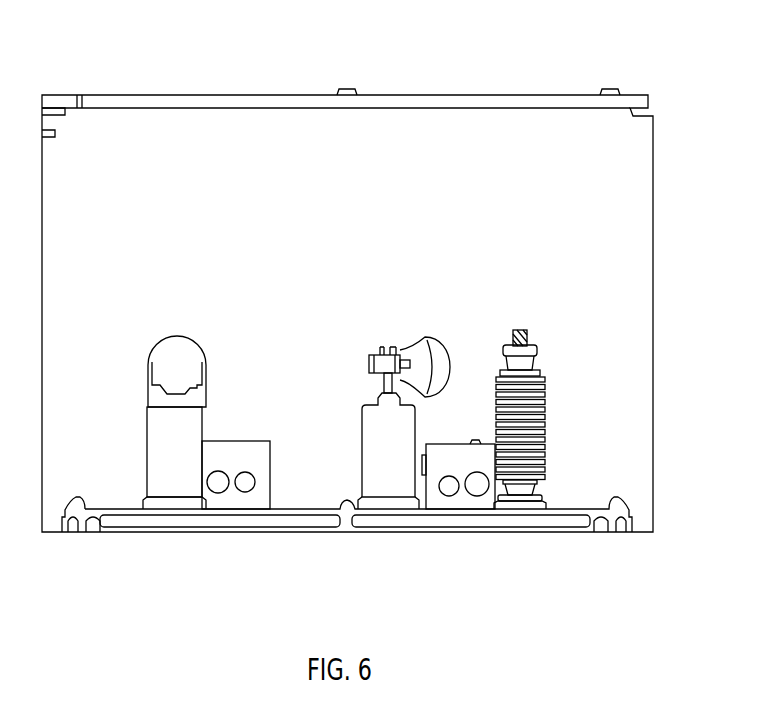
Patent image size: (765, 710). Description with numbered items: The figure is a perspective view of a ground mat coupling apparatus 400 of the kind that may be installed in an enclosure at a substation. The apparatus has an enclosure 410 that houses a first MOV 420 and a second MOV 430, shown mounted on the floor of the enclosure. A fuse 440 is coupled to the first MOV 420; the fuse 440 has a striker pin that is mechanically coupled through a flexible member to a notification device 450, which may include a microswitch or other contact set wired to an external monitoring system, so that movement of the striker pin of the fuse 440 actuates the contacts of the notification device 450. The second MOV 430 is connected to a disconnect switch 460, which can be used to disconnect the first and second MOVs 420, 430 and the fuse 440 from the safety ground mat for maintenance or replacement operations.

The ground mat coupling apparatus 400 is at (386, 282).
The enclosure 410 is at (653, 165).
The first MOV 420 is at (425, 337).
The second MOV 430 is at (369, 362).
The fuse 440 is at (180, 340).
The notification device 450 is at (443, 500).
The disconnect switch 460 is at (522, 333).